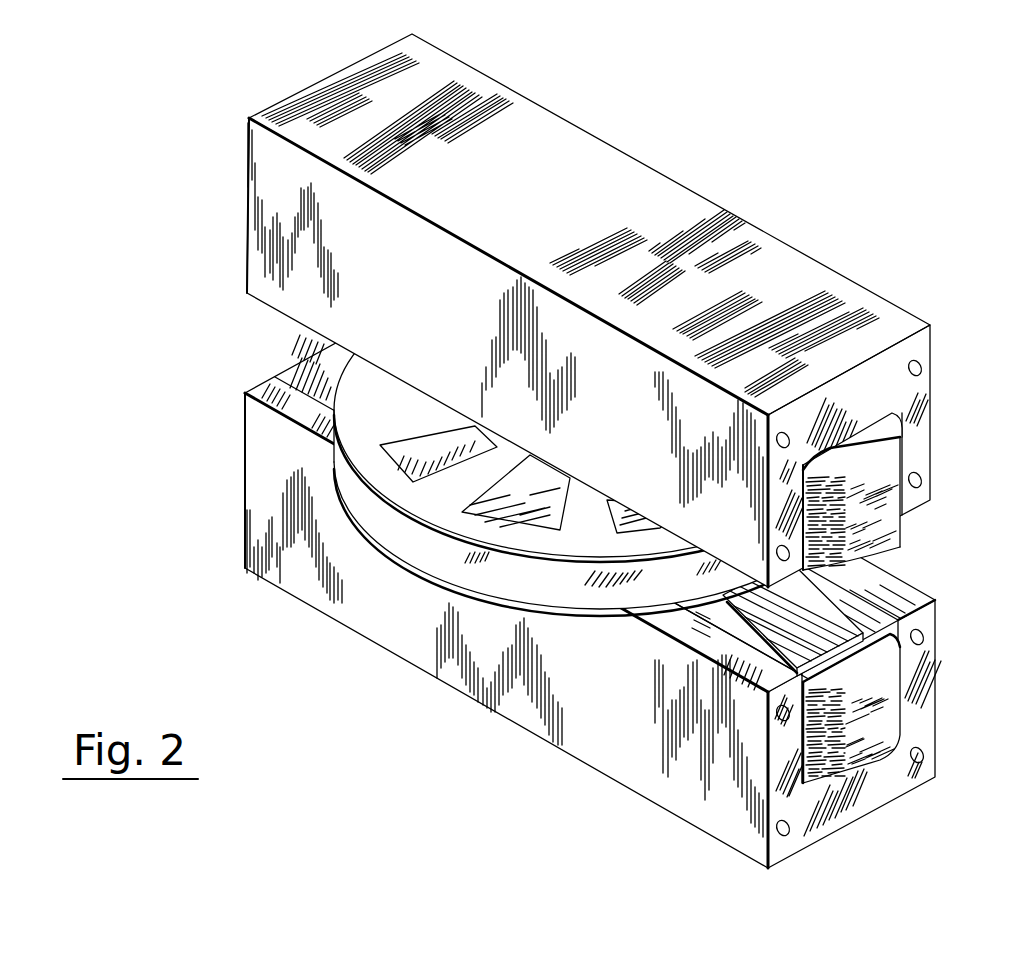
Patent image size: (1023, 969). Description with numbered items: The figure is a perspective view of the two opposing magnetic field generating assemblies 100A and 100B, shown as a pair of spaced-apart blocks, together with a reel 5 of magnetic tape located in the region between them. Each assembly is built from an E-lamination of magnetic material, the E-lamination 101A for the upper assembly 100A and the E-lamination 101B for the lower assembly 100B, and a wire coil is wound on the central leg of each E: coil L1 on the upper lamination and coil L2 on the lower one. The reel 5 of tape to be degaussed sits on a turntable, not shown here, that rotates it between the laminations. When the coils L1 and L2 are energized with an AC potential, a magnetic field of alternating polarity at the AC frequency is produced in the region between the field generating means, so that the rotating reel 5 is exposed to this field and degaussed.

The magnetic field generating assembly 100A is at (635, 310).
The E-lamination 101A is at (923, 450).
The coil L1 is at (883, 547).
The magnetic field generating assembly 100B is at (617, 584).
The E-lamination 101B is at (677, 805).
The coil L2 is at (897, 735).
The reel of magnetic tape 5 is at (353, 419).